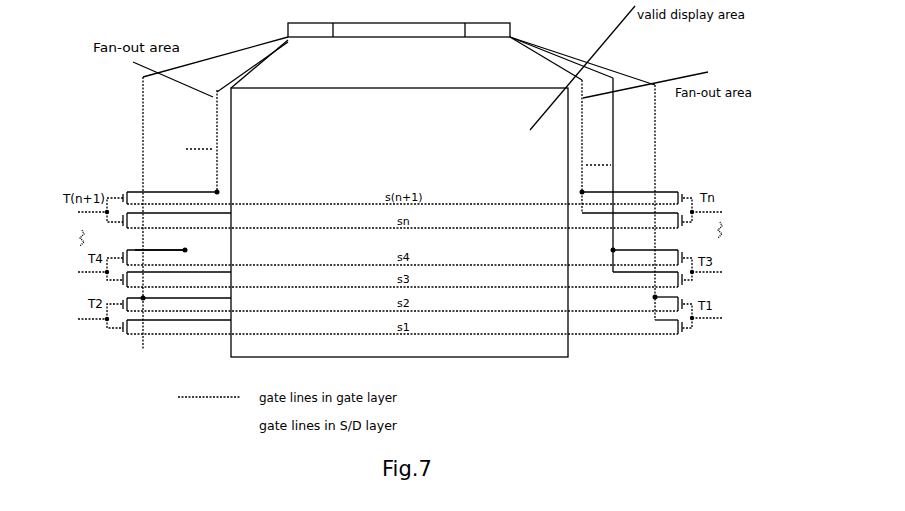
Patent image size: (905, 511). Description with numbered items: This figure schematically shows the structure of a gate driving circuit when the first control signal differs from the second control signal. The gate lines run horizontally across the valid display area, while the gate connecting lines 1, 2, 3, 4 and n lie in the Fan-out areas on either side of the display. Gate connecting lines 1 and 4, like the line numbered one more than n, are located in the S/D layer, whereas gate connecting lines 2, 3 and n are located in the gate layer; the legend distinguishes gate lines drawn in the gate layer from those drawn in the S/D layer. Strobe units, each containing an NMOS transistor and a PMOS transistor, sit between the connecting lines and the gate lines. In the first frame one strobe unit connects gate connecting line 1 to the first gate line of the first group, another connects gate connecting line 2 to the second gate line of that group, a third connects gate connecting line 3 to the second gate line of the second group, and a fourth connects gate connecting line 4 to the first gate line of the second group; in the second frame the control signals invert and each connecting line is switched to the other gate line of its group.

The gate connecting line 1 is at (649, 202).
The gate connecting line 2 is at (146, 213).
The gate connecting line 3 is at (615, 175).
The gate connecting line 4 is at (160, 185).
The gate connecting line n is at (577, 146).